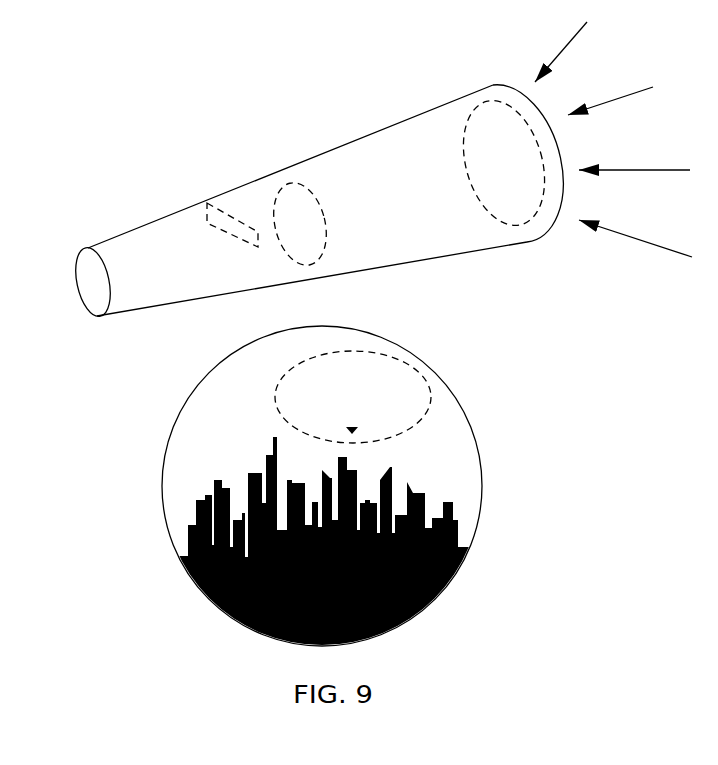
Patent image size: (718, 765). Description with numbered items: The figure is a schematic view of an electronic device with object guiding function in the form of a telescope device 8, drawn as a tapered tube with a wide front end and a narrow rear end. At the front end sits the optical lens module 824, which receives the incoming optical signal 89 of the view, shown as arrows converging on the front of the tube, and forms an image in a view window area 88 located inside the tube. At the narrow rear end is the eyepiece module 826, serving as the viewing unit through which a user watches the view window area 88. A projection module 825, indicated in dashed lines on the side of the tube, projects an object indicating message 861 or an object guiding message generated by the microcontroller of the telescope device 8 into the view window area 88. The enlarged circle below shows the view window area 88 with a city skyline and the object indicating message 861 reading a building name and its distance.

The telescope device 8 is at (373, 130).
The optical lens module 824 is at (478, 110).
The projection module 825 is at (208, 205).
The eyepiece module 826 is at (75, 268).
The view window area 88 is at (290, 185).
The object indicating message 861 is at (449, 313).
The optical signal 89 is at (642, 240).